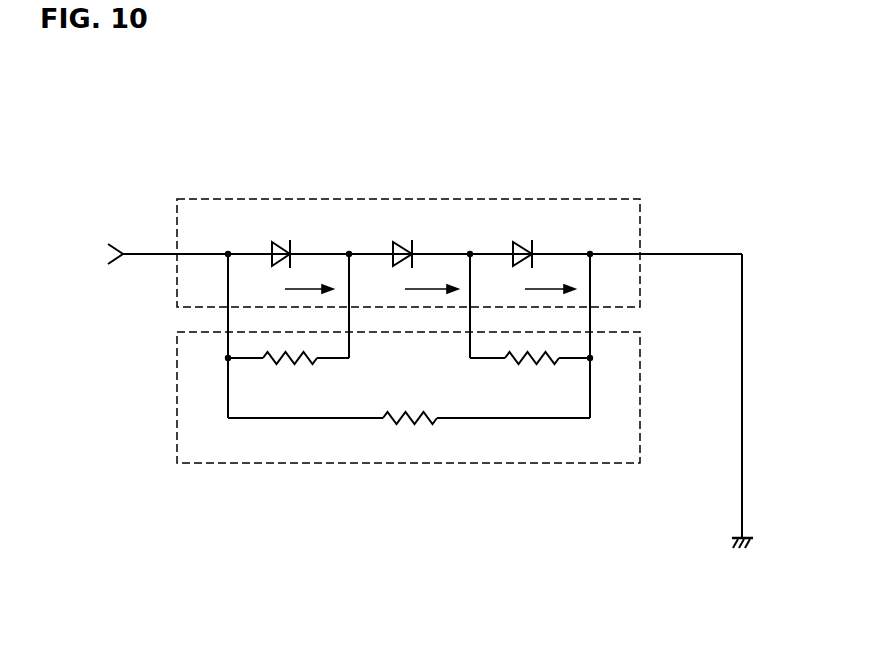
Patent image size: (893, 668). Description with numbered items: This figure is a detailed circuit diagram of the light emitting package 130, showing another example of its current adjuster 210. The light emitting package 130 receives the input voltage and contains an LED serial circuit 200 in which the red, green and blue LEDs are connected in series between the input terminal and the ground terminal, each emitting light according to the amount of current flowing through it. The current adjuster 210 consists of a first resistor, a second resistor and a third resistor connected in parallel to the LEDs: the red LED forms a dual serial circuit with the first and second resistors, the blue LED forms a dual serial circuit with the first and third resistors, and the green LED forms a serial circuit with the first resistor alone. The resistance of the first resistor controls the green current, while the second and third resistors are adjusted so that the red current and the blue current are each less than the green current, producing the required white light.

The light emitting package 130 is at (111, 88).
The LED serial circuit 200 is at (640, 225).
The current adjuster 210 is at (640, 396).